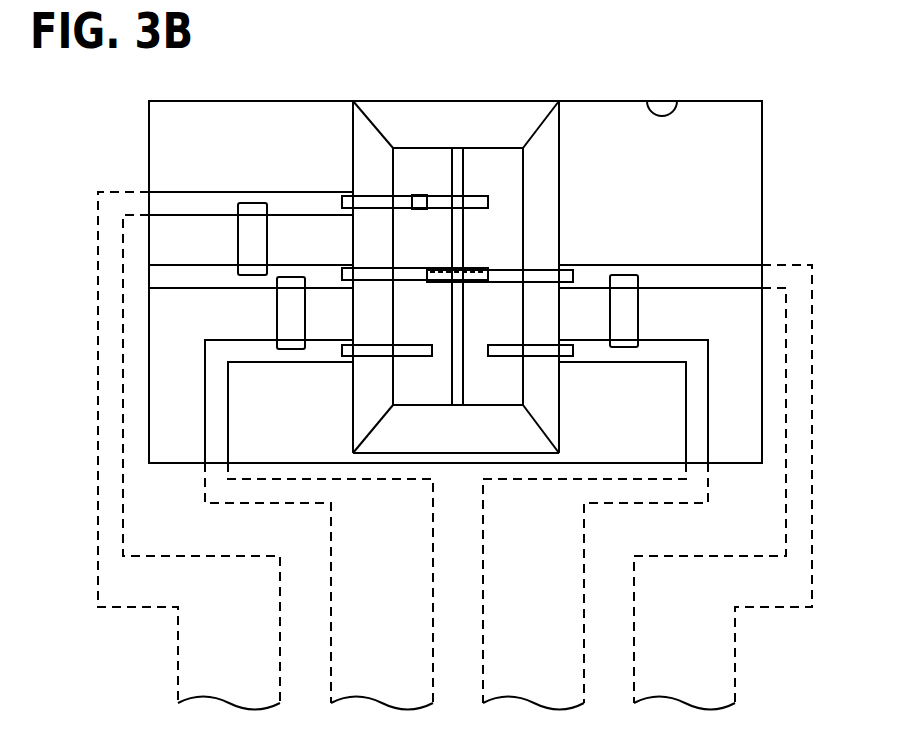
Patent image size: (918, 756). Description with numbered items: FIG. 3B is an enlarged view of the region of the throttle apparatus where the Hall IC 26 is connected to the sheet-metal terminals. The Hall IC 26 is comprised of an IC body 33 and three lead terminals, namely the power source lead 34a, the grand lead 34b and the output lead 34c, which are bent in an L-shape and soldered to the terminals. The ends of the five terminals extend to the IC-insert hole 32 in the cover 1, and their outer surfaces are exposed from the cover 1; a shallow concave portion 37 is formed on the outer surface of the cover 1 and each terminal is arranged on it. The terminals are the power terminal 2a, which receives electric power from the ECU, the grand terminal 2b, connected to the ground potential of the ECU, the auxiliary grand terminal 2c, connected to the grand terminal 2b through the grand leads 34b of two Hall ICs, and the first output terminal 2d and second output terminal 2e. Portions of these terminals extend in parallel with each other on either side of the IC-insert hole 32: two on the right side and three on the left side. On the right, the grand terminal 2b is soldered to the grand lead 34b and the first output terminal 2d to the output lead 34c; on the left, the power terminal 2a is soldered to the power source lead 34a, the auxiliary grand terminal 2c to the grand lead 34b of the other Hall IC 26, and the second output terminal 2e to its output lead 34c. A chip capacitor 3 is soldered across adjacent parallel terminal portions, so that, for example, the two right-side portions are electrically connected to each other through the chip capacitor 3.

The cover 1 is at (748, 82).
The power terminal 2a is at (178, 658).
The grand terminal 2b is at (738, 645).
The auxiliary grand terminal 2c is at (217, 274).
The first output terminal 2d is at (585, 560).
The second output terminal 2e is at (328, 578).
The chip capacitor 3 is at (287, 302).
The Hall IC 26 is at (383, 175).
The IC-insert hole 32 is at (490, 122).
The IC body 33 is at (440, 230).
The power source lead 34a is at (440, 194).
The grand lead 34b is at (407, 273).
The output lead 34c is at (402, 349).
The shallow concave portion 37 is at (676, 100).